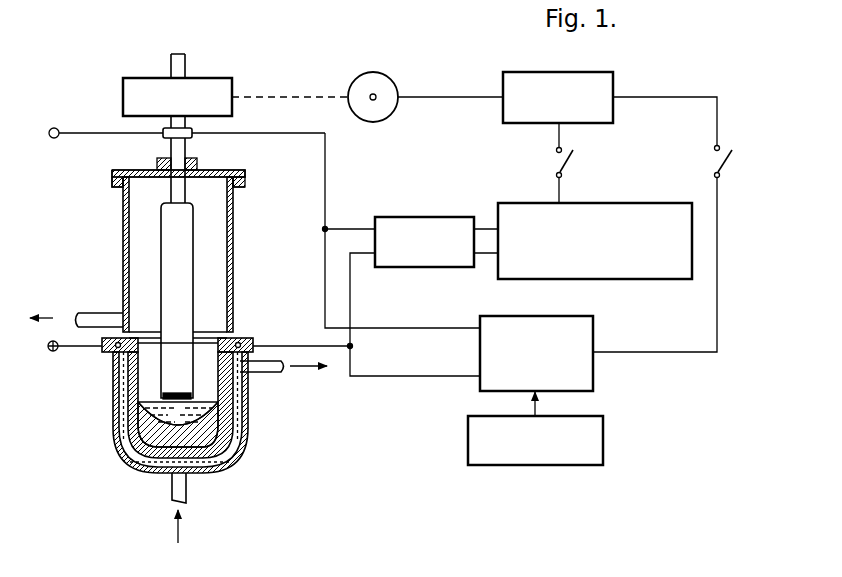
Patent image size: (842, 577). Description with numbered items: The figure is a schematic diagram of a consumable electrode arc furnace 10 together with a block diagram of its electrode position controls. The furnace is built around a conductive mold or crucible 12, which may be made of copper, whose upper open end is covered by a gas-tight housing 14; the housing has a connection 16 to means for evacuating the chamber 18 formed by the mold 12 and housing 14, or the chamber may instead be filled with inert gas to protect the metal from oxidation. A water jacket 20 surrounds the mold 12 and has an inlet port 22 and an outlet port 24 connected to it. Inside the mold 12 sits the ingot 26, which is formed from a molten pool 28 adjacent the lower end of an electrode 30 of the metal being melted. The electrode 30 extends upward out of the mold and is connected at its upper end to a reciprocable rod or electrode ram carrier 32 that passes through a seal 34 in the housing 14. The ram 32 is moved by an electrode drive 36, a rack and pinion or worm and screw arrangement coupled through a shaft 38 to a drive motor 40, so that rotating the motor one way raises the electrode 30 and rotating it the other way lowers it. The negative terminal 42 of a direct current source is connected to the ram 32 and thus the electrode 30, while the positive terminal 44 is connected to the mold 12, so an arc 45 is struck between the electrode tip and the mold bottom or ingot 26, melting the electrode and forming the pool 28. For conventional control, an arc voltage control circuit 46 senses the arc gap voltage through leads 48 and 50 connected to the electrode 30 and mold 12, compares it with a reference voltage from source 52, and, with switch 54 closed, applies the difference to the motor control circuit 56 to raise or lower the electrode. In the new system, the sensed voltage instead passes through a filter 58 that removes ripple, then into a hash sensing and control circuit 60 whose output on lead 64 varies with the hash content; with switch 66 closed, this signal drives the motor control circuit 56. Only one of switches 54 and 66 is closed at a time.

The consumable electrode arc furnace 10 is at (268, 253).
The conductive mold or crucible 12 is at (138, 396).
The gas-tight housing 14 is at (122, 234).
The connection 16 is at (86, 313).
The chamber 18 is at (213, 318).
The water jacket 20 is at (121, 462).
The inlet port 22 is at (172, 493).
The outlet port 24 is at (268, 361).
The ingot 26 is at (213, 436).
The molten pool 28 is at (213, 405).
The electrode 30 is at (171, 282).
The reciprocable rod or electrode ram carrier 32 is at (181, 148).
The seal 34 is at (157, 163).
The electrode drive 36 is at (226, 79).
The shaft 38 is at (281, 97).
The drive motor 40 is at (383, 80).
The negative terminal 42 is at (57, 129).
The positive terminal 44 is at (51, 352).
The arc 45 is at (196, 393).
The arc voltage control circuit 46 is at (533, 316).
The lead 48 is at (326, 162).
The lead 50 is at (347, 352).
The reference voltage source 52 is at (577, 465).
The switch 54 is at (714, 163).
The motor control circuit 56 is at (580, 72).
The filter 58 is at (437, 217).
The hash sensing and control circuit 60 is at (623, 203).
The lead 64 is at (556, 191).
The switch 66 is at (556, 167).